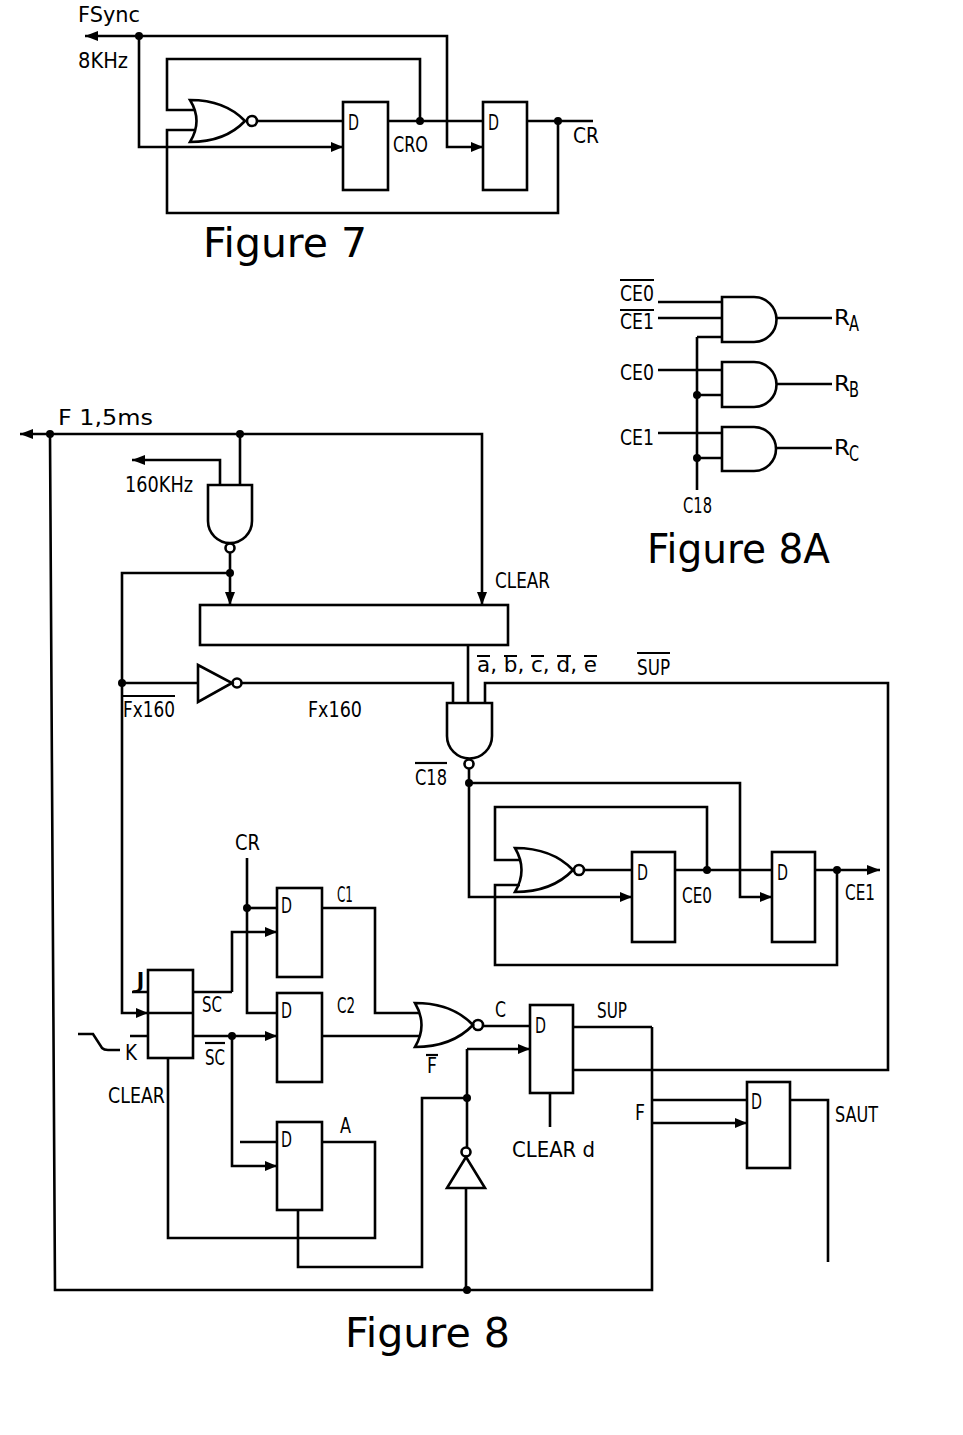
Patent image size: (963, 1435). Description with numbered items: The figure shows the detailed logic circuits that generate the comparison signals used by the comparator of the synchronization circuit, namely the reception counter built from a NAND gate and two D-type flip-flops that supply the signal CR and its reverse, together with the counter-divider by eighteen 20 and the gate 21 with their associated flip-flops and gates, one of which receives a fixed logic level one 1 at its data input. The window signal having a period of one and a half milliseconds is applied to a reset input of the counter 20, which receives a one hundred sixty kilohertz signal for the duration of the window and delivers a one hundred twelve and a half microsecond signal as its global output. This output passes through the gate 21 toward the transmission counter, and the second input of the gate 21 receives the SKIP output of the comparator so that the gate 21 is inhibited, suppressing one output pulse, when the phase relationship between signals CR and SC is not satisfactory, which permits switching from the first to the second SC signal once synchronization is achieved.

The counter-divider by 18 20 is at (340, 604).
The gate 21 is at (477, 737).
The logic-level one input to flip-flop A 1 is at (280, 1162).